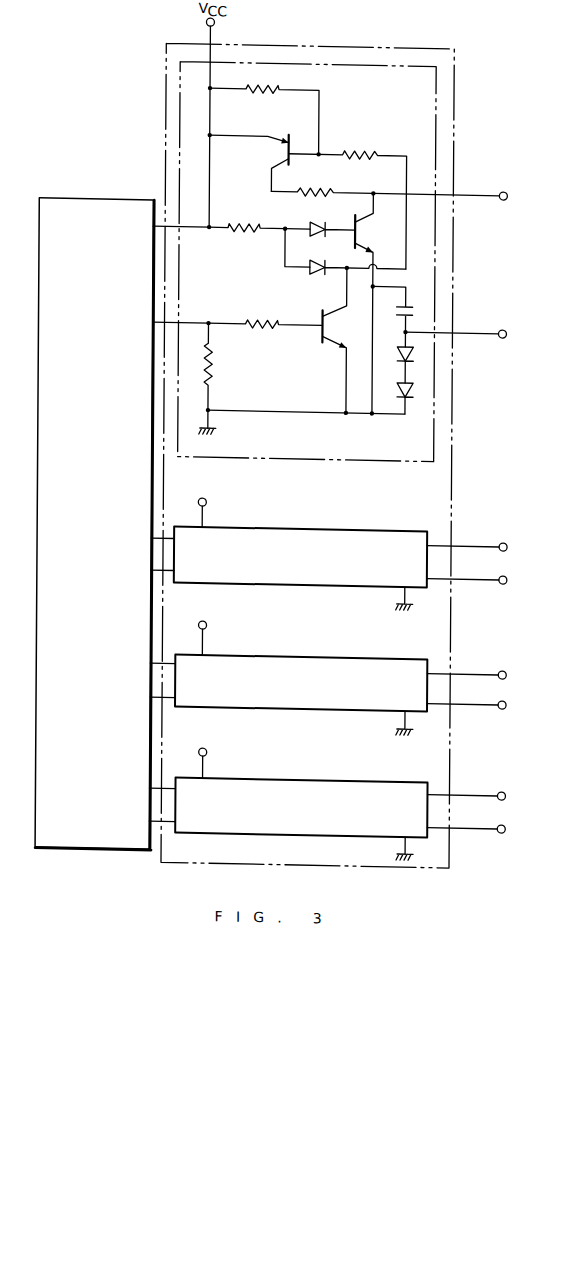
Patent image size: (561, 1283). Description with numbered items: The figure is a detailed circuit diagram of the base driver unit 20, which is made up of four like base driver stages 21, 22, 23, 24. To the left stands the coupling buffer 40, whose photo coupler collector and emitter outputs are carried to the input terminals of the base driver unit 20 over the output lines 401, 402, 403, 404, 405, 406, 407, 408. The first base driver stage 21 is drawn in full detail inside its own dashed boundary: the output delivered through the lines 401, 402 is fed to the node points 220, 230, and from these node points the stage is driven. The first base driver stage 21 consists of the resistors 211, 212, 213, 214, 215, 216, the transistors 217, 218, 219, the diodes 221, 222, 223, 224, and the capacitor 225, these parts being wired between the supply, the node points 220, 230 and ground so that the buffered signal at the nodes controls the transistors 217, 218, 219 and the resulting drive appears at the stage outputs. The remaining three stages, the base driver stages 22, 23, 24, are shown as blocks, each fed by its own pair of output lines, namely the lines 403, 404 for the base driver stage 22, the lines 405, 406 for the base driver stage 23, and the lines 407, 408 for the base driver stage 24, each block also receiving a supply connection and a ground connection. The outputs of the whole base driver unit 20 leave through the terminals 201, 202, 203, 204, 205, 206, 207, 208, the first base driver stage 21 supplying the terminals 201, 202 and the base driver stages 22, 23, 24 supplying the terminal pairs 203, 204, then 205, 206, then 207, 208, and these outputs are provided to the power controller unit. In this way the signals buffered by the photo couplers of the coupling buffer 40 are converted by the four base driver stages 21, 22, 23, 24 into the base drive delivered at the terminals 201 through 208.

The base driver unit 20 is at (413, 41).
The first base driver stage 21 is at (408, 458).
The base driver stage 22 is at (303, 527).
The base driver stage 23 is at (303, 655).
The base driver stage 24 is at (303, 778).
The coupling buffer 40 is at (81, 200).
The output terminal 201 is at (445, 186).
The output terminal 202 is at (459, 324).
The output terminal 203 is at (469, 538).
The output terminal 204 is at (469, 571).
The output terminal 205 is at (468, 666).
The output terminal 206 is at (468, 696).
The output terminal 207 is at (468, 787).
The output terminal 208 is at (468, 820).
The resistor 211 is at (265, 111).
The resistor 212 is at (248, 219).
The resistor 213 is at (265, 315).
The resistor 214 is at (347, 201).
The resistor 215 is at (323, 184).
The resistor 216 is at (218, 379).
The transistor 217 is at (248, 162).
The transistor 218 is at (371, 303).
The transistor 219 is at (340, 341).
The node point 220 is at (210, 231).
The diode 221 is at (320, 222).
The diode 222 is at (316, 274).
The diode 223 is at (416, 358).
The diode 224 is at (416, 399).
The capacitor 225 is at (400, 309).
The node point 230 is at (208, 321).
The output line 401 is at (189, 225).
The output line 402 is at (187, 327).
The output line 403 is at (170, 537).
The output line 404 is at (169, 573).
The output line 405 is at (170, 662).
The output line 406 is at (169, 700).
The output line 407 is at (170, 787).
The output line 408 is at (169, 824).